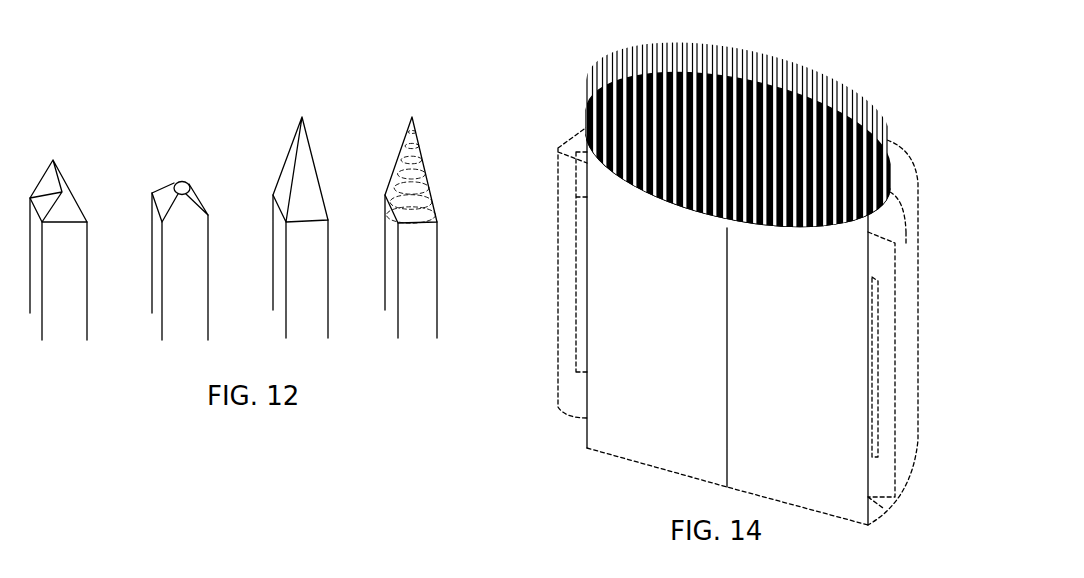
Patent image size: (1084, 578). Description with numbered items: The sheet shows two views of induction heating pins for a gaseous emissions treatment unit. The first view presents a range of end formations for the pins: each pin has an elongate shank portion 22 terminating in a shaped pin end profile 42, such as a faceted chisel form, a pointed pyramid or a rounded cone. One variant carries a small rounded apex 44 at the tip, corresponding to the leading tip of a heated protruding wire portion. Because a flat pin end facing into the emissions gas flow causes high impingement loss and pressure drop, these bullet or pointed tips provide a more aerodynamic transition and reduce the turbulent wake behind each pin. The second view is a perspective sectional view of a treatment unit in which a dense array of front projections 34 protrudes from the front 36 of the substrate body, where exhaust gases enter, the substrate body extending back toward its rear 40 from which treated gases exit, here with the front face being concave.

In FIG. 12, the microneedle body 22 is at (70, 288).
In FIG. 12, the pin end profile 42 is at (70, 197).
In FIG. 12, the wire portion 44 is at (180, 184).
In FIG. 14, the front projections 34 is at (840, 85).
In FIG. 14, the front 36 is at (588, 125).
In FIG. 14, the rear 40 is at (612, 455).